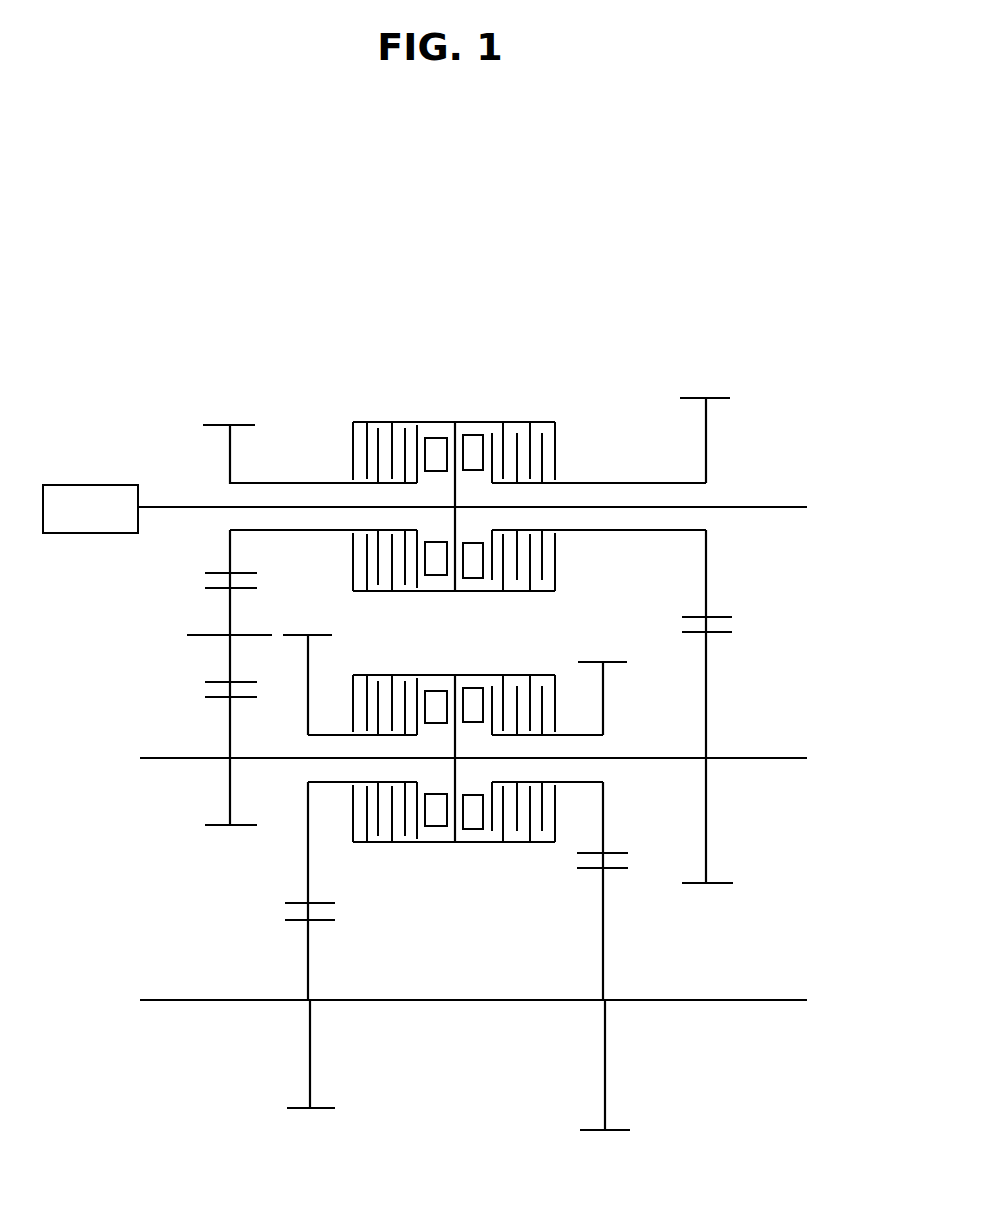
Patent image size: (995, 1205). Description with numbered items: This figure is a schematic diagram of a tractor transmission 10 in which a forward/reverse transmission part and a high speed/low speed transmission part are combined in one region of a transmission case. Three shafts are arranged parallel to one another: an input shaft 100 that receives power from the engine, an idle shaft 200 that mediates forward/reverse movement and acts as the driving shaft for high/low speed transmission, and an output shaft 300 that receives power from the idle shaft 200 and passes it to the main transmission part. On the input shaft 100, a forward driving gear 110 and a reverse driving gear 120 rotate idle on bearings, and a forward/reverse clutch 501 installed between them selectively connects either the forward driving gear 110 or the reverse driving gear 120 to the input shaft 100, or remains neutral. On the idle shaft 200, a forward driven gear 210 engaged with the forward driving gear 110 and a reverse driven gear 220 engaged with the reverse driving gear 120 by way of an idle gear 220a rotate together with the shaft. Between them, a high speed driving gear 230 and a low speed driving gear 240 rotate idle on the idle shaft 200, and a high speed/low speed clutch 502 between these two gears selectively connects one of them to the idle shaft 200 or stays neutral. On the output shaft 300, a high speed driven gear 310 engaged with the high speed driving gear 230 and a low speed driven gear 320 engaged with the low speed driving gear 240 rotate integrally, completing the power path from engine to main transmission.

The transmission 10 is at (273, 271).
The input shaft 100 is at (177, 508).
The forward driving gear 110 is at (692, 397).
The reverse driving gear 120 is at (242, 423).
The idle shaft 200 is at (173, 758).
The forward driven gear 210 is at (708, 690).
The reverse driven gear 220 is at (230, 792).
The idle gear 220a is at (230, 612).
The high speed driving gear 230 is at (310, 872).
The low speed driving gear 240 is at (603, 817).
The output shaft 300 is at (770, 1000).
The high speed driven gear 310 is at (310, 1050).
The low speed driven gear 320 is at (607, 1068).
The forward/reverse clutch 501 is at (433, 423).
The high speed/low speed clutch 502 is at (437, 845).